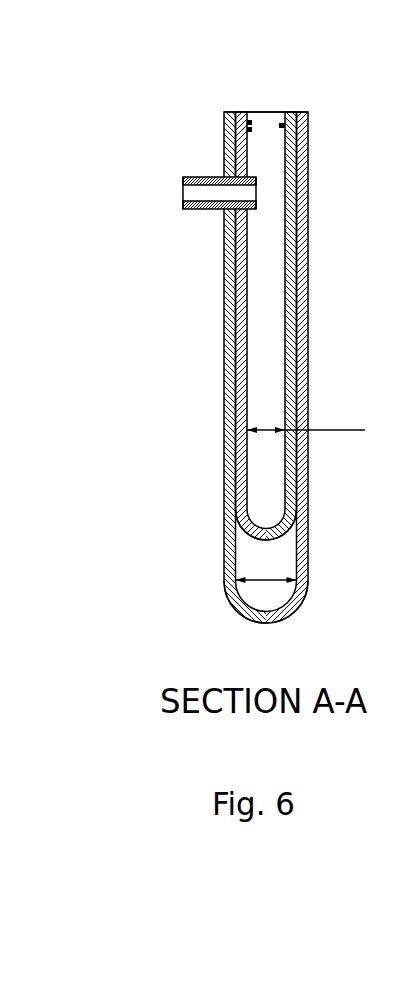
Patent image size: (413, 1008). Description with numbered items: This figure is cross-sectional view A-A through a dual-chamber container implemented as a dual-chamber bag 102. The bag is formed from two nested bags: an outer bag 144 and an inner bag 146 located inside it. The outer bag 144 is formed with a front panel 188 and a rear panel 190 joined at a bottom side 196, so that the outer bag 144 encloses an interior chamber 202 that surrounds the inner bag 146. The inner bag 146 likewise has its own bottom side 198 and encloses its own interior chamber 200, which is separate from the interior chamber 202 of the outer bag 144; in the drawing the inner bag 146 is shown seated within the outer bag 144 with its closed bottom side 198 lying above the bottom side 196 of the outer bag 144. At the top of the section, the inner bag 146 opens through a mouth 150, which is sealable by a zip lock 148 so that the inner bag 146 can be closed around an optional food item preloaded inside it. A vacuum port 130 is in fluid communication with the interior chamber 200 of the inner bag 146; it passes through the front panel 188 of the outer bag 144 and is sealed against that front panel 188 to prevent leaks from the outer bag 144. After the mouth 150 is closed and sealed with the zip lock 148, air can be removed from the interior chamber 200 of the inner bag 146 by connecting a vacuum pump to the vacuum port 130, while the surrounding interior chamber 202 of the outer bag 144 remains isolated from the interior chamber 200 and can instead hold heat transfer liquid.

The dual-chamber bag 102 is at (231, 336).
The vacuum port 130 is at (183, 208).
The outer bag 144 is at (208, 621).
The inner bag 146 is at (207, 547).
The zip lock 148 is at (252, 120).
The mouth 150 is at (268, 66).
The front panel 188 is at (224, 340).
The rear panel 190 is at (309, 538).
The bottom side 196 is at (265, 624).
The bottom side 198 is at (268, 541).
The interior chamber 200 is at (323, 429).
The interior chamber 202 is at (263, 585).